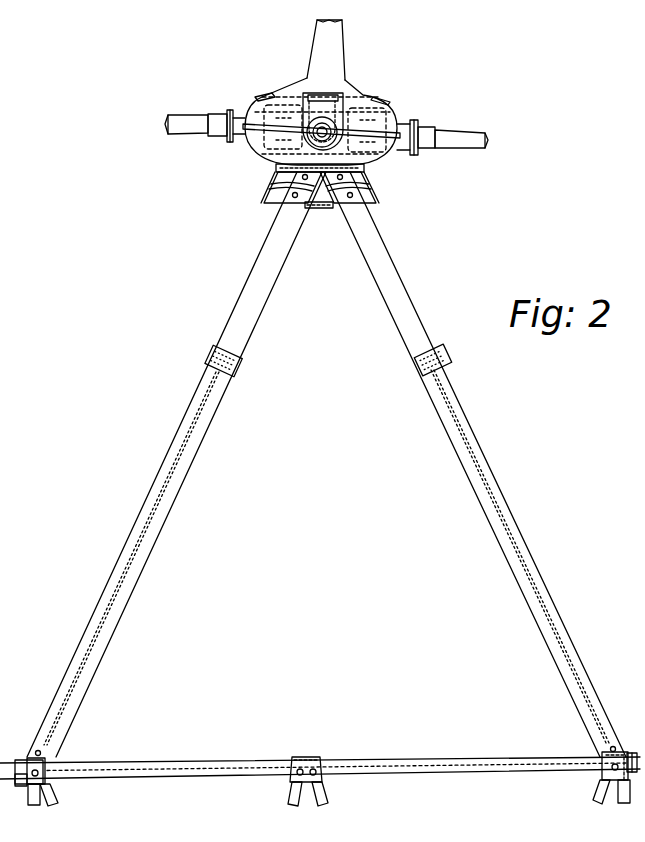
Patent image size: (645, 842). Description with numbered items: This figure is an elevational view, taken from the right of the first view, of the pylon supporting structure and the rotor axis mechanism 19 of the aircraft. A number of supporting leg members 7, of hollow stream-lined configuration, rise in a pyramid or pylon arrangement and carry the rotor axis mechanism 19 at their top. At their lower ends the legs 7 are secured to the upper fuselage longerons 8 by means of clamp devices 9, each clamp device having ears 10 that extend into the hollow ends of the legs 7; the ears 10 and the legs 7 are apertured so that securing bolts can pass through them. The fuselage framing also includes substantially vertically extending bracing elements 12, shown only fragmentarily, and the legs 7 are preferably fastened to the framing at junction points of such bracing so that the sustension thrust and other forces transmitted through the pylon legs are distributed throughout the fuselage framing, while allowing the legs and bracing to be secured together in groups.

The rotor axis mechanism 19 is at (326, 96).
The supporting leg members 7 is at (262, 263).
The upper fuselage longerons 8 is at (182, 768).
The clamp devices 9 is at (47, 763).
The ears 10 is at (308, 723).
The vertically extending bracing elements 12 is at (50, 797).